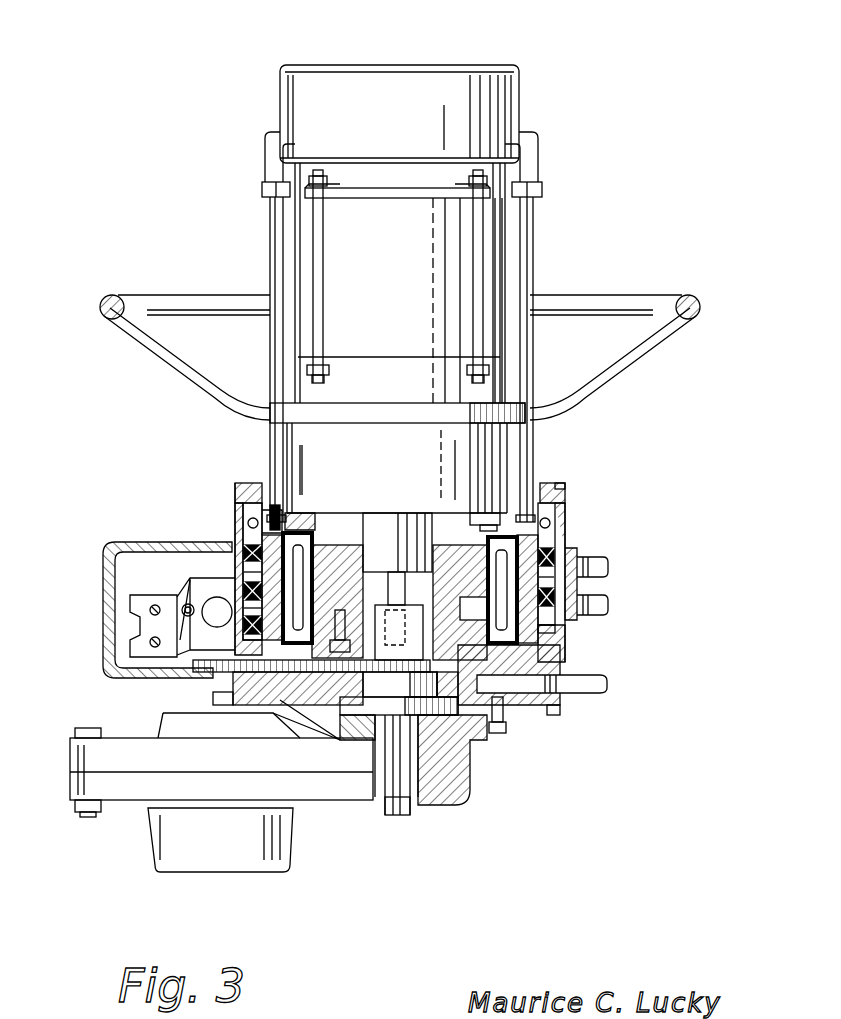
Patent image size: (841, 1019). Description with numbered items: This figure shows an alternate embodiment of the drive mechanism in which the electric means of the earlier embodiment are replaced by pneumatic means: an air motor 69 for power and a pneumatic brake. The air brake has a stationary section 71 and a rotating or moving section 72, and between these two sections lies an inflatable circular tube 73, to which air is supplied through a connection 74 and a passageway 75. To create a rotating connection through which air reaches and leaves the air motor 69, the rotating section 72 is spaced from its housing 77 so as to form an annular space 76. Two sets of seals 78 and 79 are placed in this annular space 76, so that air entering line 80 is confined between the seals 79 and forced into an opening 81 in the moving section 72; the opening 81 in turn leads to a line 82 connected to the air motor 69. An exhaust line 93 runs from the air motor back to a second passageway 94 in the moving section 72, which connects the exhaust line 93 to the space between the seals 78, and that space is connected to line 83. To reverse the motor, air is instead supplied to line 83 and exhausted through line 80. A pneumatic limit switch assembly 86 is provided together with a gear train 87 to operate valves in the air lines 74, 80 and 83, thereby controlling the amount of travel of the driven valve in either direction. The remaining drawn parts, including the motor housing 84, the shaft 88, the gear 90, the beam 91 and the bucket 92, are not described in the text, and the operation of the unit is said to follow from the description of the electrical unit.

The air motor 69 is at (517, 104).
The exhaust line 93 is at (270, 237).
The line 82 is at (530, 261).
The motor housing 84 is at (508, 453).
The second passageway 94 is at (272, 530).
The inflatable circular tube 73 is at (310, 541).
The stationary section 71 is at (347, 568).
The drive shaft 88 is at (398, 585).
The rotating or moving section 72 is at (256, 632).
The opening 81 is at (553, 540).
The seals 78 is at (558, 552).
The seals 79 is at (578, 588).
The line 83 is at (608, 565).
The line 80 is at (608, 603).
The annular space 76 is at (557, 633).
The housing 77 is at (558, 652).
The connection 74 is at (608, 683).
The passageway 75 is at (535, 692).
The gear 90 is at (408, 695).
The beam 91 is at (375, 760).
The bucket 92 is at (320, 810).
The gear train 87 is at (180, 664).
The pneumatic limit switch assembly 86 is at (150, 592).